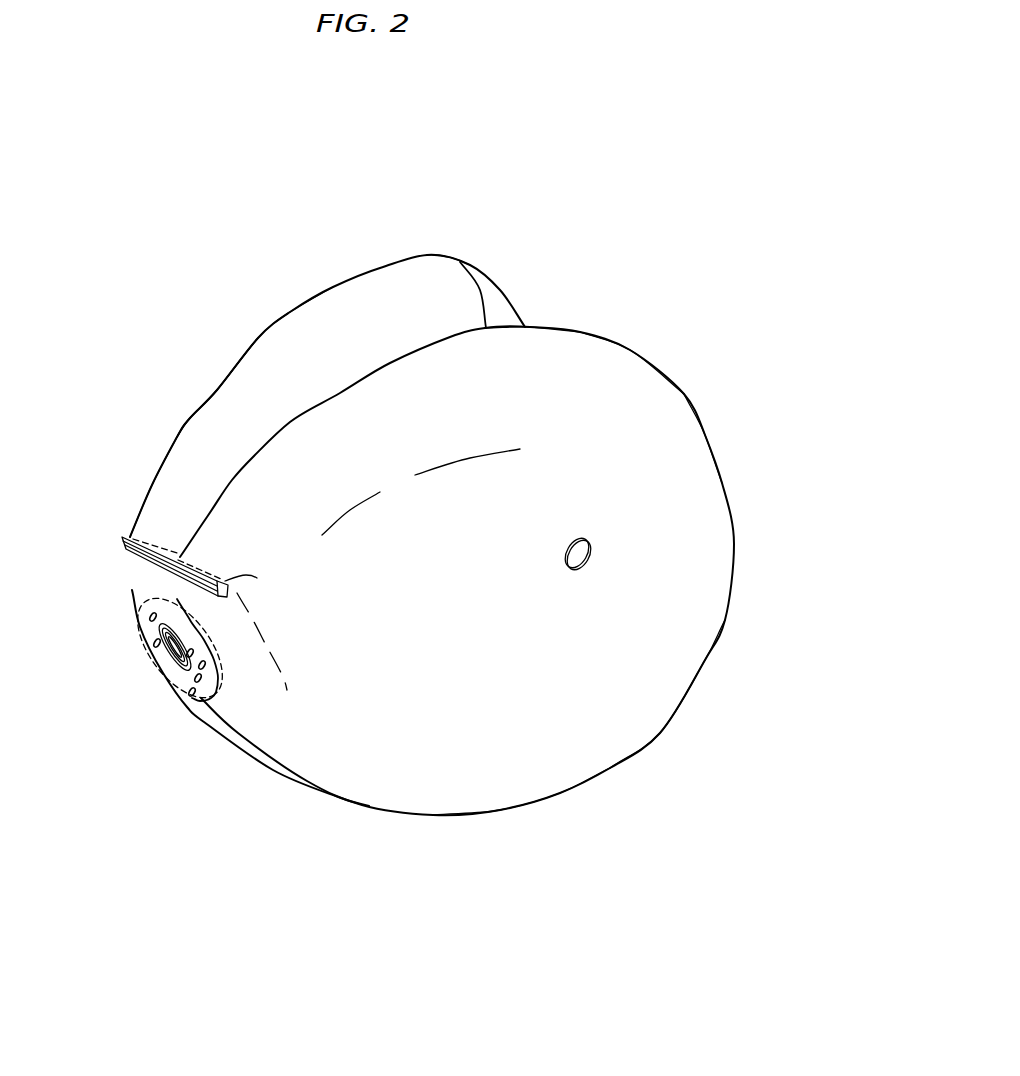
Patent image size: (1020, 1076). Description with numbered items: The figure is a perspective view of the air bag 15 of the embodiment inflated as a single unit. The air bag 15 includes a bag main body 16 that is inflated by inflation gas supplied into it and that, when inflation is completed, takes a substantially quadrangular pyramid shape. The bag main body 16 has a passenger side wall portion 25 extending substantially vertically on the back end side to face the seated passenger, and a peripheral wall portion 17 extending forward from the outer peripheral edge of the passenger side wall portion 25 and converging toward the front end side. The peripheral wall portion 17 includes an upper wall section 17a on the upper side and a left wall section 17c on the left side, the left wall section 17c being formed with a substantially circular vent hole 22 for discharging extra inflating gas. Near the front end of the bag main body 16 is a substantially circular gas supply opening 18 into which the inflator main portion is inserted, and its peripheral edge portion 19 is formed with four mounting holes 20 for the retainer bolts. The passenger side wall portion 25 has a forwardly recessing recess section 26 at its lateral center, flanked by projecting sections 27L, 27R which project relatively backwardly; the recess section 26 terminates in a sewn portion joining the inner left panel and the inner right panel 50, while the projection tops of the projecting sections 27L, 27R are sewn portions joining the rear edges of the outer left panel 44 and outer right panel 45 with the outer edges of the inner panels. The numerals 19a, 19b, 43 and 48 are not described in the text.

The air bag 15 is at (636, 210).
The bag main body 16 is at (258, 322).
The peripheral wall portion 17 is at (360, 810).
The upper wall section 17a is at (312, 336).
The left wall section 17c is at (522, 783).
The gas supply opening 18 is at (172, 657).
The peripheral edge portion 19 is at (185, 687).
The mounting projection 19a is at (128, 610).
The boss end portion 19b is at (207, 703).
The mounting holes 20 is at (158, 645).
The vent holes 22 is at (569, 562).
The passenger side wall portion 25 is at (628, 347).
The recess section 26 is at (508, 325).
The projecting section 27L is at (680, 393).
The projecting section 27R is at (460, 252).
The pair of portions 43 is at (420, 602).
The outer left panel 44 is at (590, 742).
The outer right panel 45 is at (186, 445).
The recess 48 is at (514, 253).
The inner right panel 50 is at (497, 290).